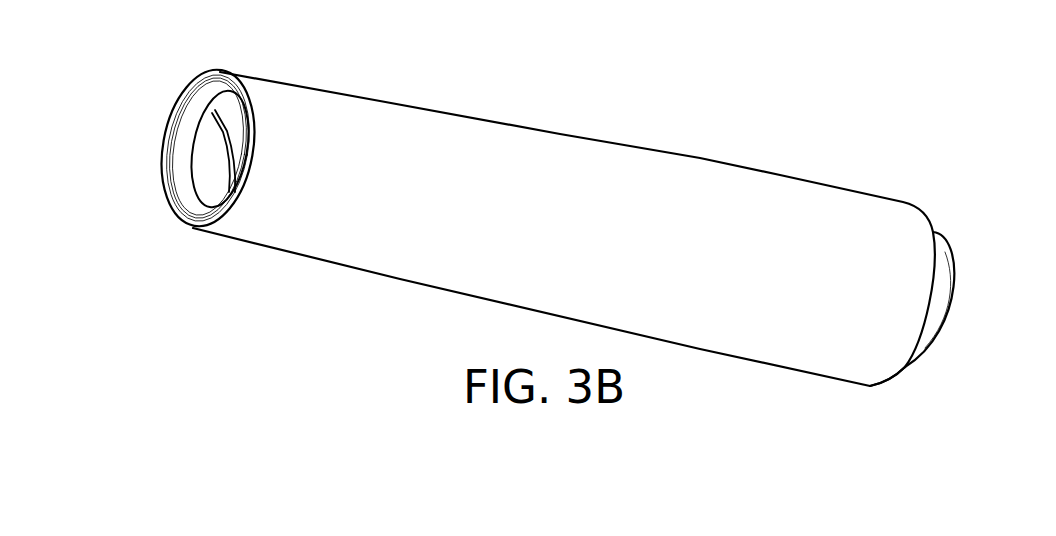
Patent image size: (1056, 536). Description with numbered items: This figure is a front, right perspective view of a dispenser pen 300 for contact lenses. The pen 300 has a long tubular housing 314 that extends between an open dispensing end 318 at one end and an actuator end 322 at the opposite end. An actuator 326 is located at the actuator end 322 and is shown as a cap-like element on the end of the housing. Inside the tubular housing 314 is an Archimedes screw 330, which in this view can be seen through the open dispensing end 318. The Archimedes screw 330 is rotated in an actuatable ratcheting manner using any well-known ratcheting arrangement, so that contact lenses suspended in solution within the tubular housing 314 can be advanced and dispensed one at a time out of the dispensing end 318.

The pen 300 is at (538, 247).
The tubular housing 314 is at (800, 178).
The dispensing end 318 is at (187, 222).
The actuator end 322 is at (893, 373).
The actuator 326 is at (957, 275).
The Archimedes screw 330 is at (208, 150).